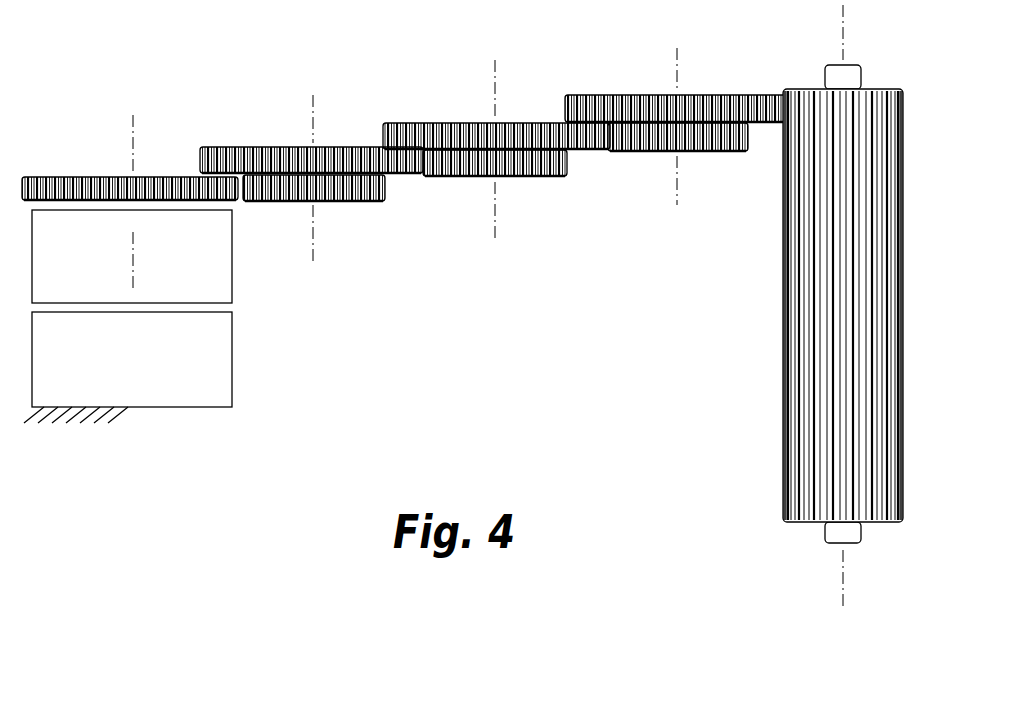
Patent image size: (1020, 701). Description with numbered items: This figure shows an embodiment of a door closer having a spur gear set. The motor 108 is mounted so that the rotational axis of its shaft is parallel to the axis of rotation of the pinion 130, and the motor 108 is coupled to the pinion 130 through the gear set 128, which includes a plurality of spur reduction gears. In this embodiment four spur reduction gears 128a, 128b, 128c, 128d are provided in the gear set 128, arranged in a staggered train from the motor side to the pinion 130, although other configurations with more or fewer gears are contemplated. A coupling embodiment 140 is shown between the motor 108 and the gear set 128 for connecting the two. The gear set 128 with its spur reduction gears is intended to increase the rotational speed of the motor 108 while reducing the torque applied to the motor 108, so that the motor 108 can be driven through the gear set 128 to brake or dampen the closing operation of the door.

The gear set 128 is at (783, 244).
The spur reduction gear 128a is at (632, 95).
The spur reduction gear 128b is at (432, 122).
The spur reduction gear 128c is at (343, 203).
The spur reduction gear 128d is at (78, 176).
The pinion 130 is at (781, 310).
The coupling embodiment 140 is at (97, 283).
The motor 108 is at (186, 382).